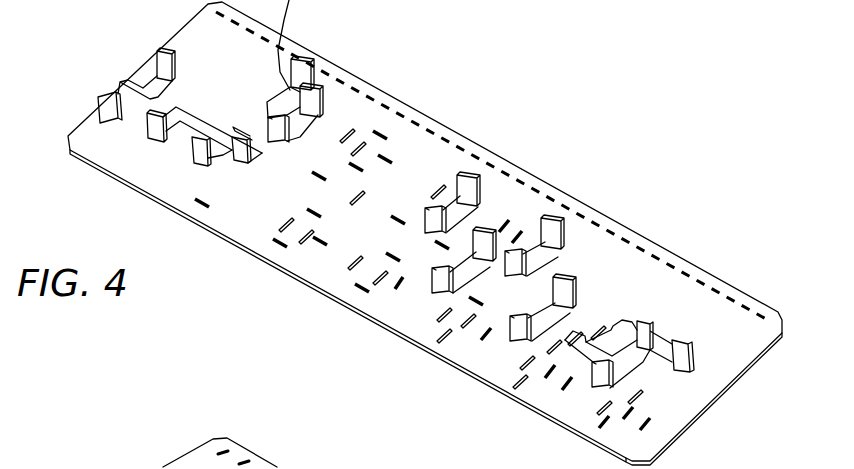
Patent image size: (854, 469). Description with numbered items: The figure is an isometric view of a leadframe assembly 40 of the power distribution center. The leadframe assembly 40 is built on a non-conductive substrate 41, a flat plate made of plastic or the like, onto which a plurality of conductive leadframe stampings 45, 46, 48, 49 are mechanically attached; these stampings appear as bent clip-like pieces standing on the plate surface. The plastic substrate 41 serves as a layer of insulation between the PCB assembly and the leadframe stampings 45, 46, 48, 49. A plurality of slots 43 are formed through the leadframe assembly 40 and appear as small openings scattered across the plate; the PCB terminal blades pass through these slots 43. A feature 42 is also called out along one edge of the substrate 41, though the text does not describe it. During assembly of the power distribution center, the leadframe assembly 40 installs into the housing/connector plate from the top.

The leadframe assembly 40 is at (458, 100).
The non-conductive substrate 41 is at (637, 267).
The edge connector contact strip 42 is at (537, 190).
The slots 43 is at (320, 243).
The conductive leadframe stamping 45 is at (133, 82).
The conductive leadframe stamping 46 is at (600, 377).
The conductive leadframe stamping 48 is at (160, 125).
The conductive leadframe stamping 49 is at (467, 175).